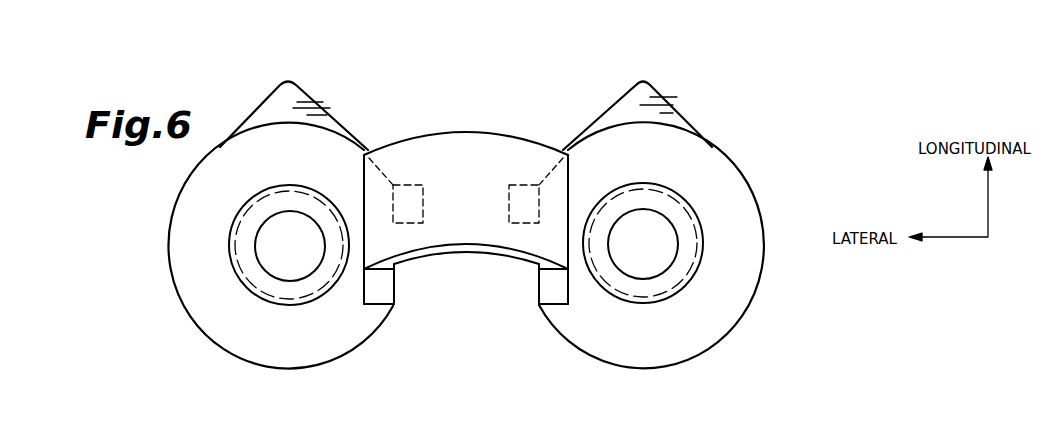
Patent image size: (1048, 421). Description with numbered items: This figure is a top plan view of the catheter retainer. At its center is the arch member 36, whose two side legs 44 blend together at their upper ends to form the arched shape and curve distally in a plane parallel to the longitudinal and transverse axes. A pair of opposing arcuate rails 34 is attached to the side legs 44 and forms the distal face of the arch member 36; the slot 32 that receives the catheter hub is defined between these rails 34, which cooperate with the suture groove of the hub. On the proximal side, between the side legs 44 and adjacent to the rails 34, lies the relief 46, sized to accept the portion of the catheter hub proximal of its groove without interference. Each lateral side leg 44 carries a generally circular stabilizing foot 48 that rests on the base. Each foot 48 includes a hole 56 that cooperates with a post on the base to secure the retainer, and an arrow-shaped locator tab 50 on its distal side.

The slot 32 is at (457, 200).
The rails 34 is at (412, 192).
The arch member 36 is at (476, 141).
The side legs 44 is at (378, 295).
The relief 46 is at (465, 270).
The feet 48 is at (208, 308).
The locator tabs 50 is at (272, 100).
The hole 56 is at (262, 252).